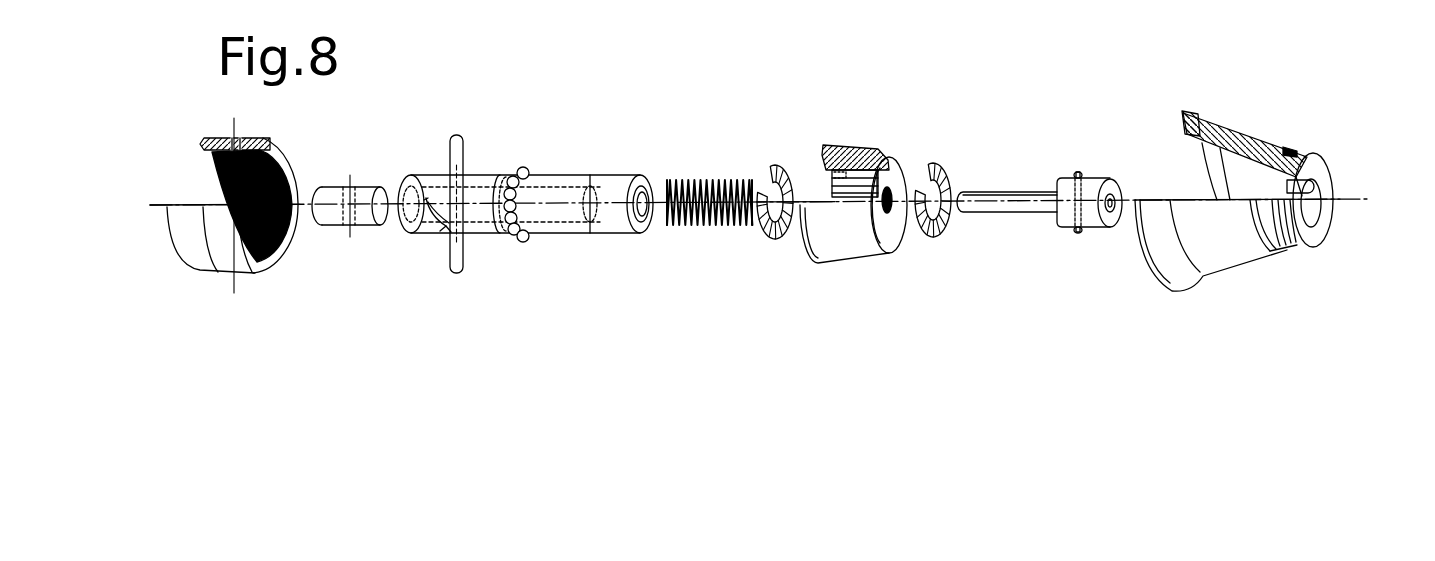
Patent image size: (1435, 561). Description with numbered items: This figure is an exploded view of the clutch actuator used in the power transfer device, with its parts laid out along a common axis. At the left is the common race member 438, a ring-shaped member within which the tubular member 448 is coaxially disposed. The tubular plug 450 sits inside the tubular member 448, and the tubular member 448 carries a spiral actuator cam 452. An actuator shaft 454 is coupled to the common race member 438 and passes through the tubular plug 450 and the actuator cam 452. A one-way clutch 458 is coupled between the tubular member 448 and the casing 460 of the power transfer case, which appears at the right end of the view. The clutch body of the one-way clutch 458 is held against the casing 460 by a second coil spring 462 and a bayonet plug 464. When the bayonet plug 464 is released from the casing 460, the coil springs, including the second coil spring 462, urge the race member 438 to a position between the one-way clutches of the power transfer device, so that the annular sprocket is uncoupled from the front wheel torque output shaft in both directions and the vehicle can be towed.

The common race member 438 is at (215, 138).
The tubular member 448 is at (560, 187).
The tubular plug 450 is at (327, 203).
The spiral actuator cam 452 is at (430, 233).
The actuator shaft 454 is at (460, 165).
The one-way clutch 458 is at (877, 132).
The casing 460 is at (1283, 120).
The second coil spring 462 is at (717, 183).
The bayonet plug 464 is at (1123, 158).